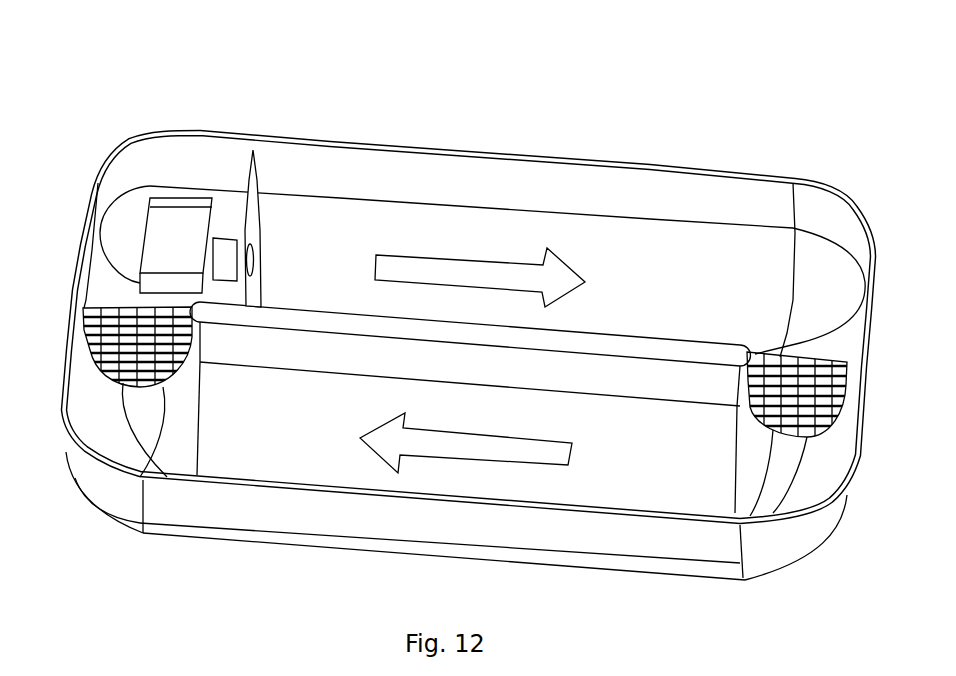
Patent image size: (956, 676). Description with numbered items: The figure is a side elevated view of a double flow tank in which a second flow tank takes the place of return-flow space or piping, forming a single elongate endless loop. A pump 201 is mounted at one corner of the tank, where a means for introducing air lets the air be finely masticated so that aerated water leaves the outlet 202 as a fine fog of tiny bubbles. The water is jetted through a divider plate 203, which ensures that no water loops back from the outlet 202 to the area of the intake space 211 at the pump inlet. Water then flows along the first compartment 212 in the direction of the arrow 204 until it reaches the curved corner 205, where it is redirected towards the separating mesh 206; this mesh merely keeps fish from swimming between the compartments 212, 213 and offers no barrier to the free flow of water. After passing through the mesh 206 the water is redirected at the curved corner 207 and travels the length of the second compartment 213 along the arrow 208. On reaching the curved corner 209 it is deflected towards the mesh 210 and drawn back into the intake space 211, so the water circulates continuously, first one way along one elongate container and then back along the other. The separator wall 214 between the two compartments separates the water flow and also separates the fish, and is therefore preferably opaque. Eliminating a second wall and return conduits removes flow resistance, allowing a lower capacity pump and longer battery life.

The pump 201 is at (183, 228).
The outlet 202 is at (227, 257).
The divider plate 203 is at (255, 195).
The arrow 204 is at (483, 262).
The curved corner 205 is at (833, 188).
The separating mesh 206 is at (800, 440).
The curved corner 207 is at (800, 513).
The arrow 208 is at (498, 432).
The curved corner 209 is at (70, 433).
The mesh 210 is at (143, 387).
The intake space 211 is at (122, 237).
The compartment 212 is at (498, 250).
The compartment 213 is at (290, 452).
The separator wall 214 is at (593, 345).